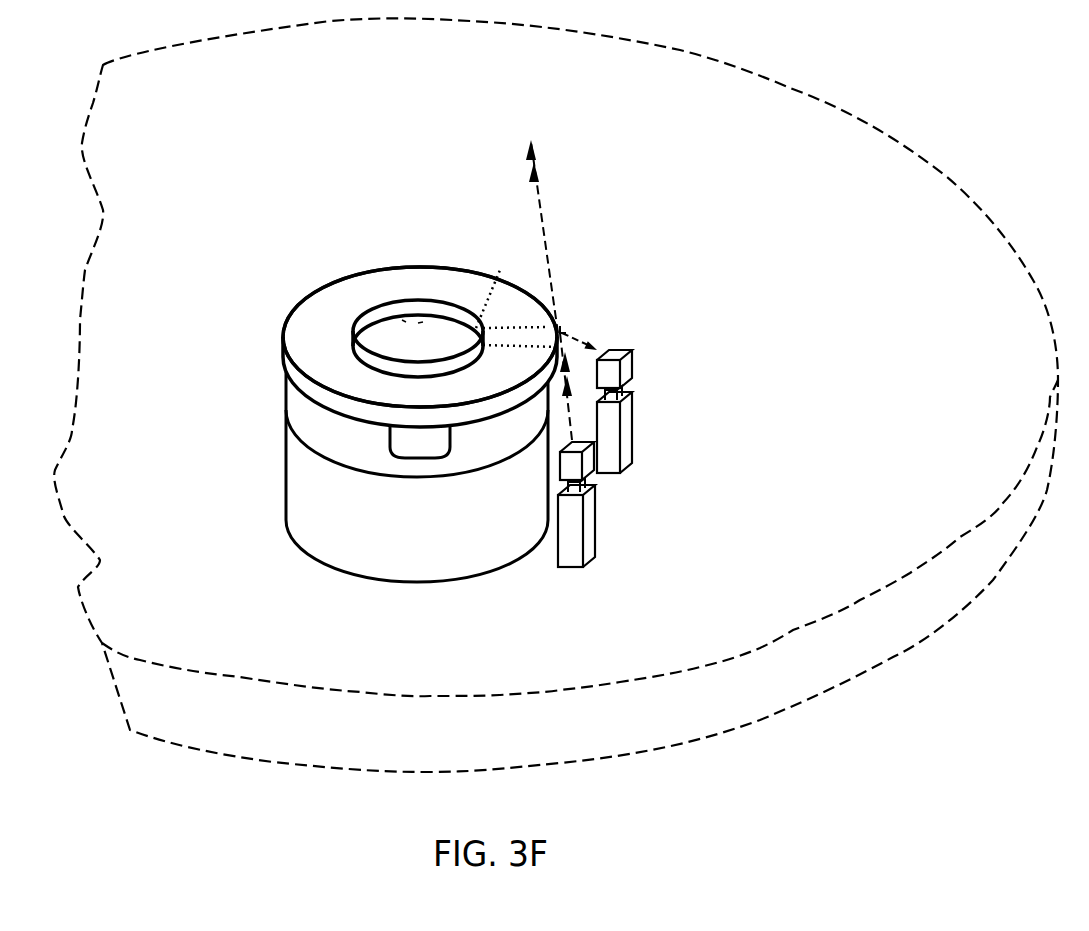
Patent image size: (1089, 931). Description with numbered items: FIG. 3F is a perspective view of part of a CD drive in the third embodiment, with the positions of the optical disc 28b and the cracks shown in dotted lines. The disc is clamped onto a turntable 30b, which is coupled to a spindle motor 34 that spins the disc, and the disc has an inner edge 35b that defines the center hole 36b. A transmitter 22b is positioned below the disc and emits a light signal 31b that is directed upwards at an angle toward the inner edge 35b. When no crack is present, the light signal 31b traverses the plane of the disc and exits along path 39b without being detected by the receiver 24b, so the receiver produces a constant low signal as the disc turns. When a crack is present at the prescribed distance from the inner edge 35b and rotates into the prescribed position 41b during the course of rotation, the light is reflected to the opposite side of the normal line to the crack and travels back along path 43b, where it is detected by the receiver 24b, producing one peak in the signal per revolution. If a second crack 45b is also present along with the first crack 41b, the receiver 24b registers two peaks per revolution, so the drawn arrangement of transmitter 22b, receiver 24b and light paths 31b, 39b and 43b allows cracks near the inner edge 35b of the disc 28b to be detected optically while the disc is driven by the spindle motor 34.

The optical disc 28b is at (870, 313).
The turntable 30b is at (286, 356).
The spindle motor 34 is at (292, 533).
The inner edge 35b is at (388, 295).
The center hole 36b is at (414, 322).
The exit light path 39b is at (538, 200).
The crack 41b is at (497, 272).
The reflected light path 43b is at (668, 293).
The second crack 45b is at (555, 312).
The receiver 24b is at (633, 366).
The light signal 31b is at (573, 428).
The transmitter 22b is at (558, 484).